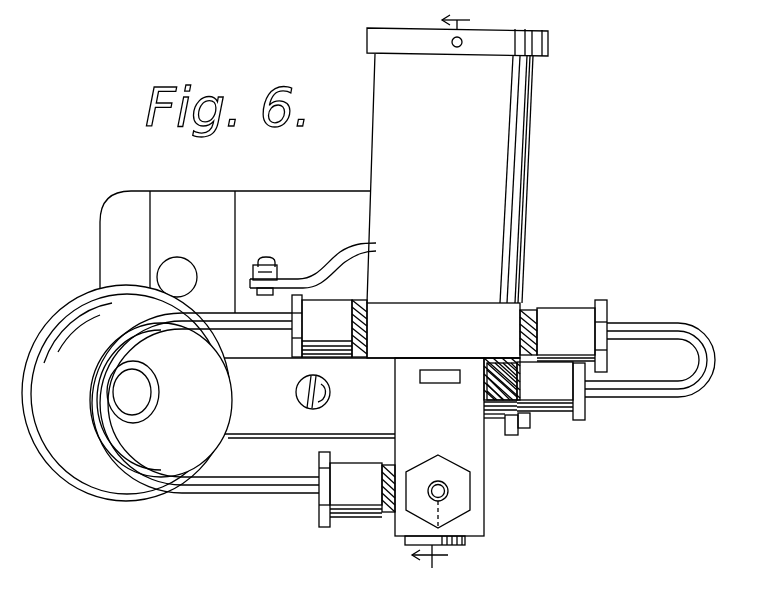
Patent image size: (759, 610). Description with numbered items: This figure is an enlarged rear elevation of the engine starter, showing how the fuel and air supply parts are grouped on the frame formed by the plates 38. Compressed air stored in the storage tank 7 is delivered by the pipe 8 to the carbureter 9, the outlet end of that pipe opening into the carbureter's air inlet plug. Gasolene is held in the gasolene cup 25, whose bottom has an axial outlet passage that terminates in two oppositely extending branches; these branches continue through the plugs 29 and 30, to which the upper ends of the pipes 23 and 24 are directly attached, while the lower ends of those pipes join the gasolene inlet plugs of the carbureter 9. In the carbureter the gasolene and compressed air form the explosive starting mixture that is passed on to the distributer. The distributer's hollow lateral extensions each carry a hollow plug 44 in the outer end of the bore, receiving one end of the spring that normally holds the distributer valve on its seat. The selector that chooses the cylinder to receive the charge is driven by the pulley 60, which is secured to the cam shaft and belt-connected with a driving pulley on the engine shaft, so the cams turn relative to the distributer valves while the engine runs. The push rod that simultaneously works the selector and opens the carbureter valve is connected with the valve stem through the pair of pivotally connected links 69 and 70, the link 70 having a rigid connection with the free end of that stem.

The storage tank 7 is at (441, 296).
The pipe 8 is at (448, 491).
The carbureter 9 is at (465, 453).
The pipe 23 is at (223, 493).
The pipe 24 is at (637, 333).
The gasolene cup 25 is at (508, 153).
The plug 29 is at (355, 358).
The plug 30 is at (540, 318).
The plates 38 is at (263, 203).
The hollow plug 44 is at (519, 430).
The pulley 60 is at (65, 447).
The link 69 is at (280, 272).
The link 70 is at (343, 272).